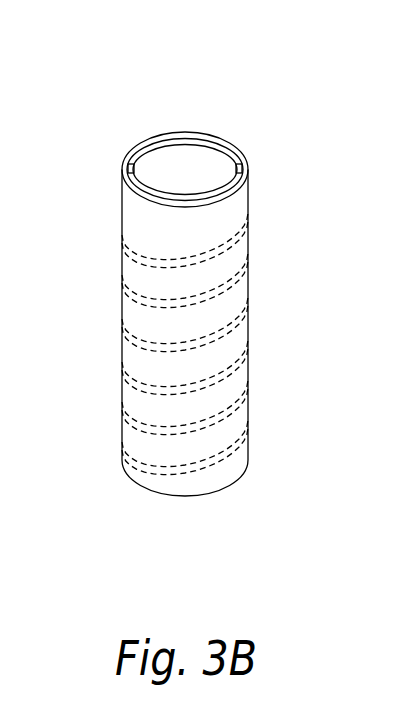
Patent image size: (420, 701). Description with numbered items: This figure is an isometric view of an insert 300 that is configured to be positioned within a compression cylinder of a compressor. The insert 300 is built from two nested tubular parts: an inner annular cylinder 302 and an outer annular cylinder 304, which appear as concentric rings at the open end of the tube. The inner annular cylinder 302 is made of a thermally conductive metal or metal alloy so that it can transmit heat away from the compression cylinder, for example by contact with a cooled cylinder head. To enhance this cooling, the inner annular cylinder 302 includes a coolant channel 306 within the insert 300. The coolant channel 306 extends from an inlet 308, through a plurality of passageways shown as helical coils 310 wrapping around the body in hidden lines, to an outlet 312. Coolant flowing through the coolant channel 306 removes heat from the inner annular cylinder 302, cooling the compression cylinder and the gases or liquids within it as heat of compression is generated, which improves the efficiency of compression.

The insert 300 is at (241, 64).
The inner annular cylinder 302 is at (133, 188).
The outer annular cylinder 304 is at (228, 198).
The coolant channel 306 is at (136, 479).
The inlet 308 is at (131, 163).
The helical coils 310 is at (138, 433).
The outlet 312 is at (240, 163).